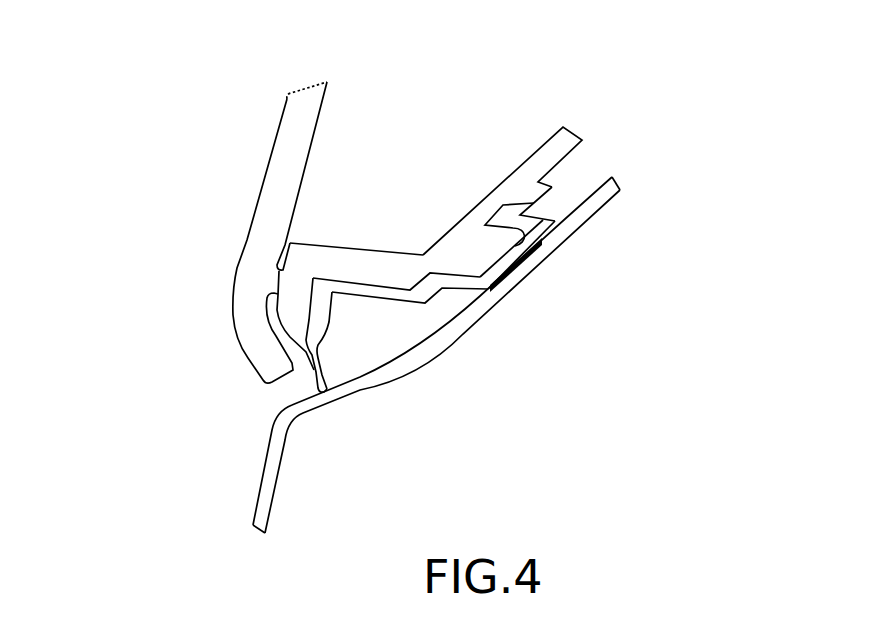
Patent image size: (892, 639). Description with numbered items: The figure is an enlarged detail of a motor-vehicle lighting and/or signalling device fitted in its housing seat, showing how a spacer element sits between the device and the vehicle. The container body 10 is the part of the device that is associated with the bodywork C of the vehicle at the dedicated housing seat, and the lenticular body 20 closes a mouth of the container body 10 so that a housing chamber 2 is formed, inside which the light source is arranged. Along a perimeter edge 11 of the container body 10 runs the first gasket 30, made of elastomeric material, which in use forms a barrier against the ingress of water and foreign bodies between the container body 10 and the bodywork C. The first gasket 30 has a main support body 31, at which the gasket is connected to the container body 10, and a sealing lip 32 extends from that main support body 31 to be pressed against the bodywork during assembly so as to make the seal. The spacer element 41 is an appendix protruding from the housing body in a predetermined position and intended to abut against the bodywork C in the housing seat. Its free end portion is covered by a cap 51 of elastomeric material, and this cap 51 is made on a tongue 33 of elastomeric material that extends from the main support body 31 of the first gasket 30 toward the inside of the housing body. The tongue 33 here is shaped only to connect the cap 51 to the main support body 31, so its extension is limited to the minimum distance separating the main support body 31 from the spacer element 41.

The housing chamber 2 is at (411, 201).
The container body 10 is at (338, 258).
The perimeter edge 11 is at (297, 328).
The lenticular body 20 is at (253, 278).
The first gasket 30 is at (400, 315).
The main support body 31 is at (332, 323).
The sealing lip 32 is at (313, 372).
The tongue 33 is at (507, 217).
The spacer element 41 is at (490, 252).
The cap 51 is at (556, 248).
The bodywork C is at (602, 203).